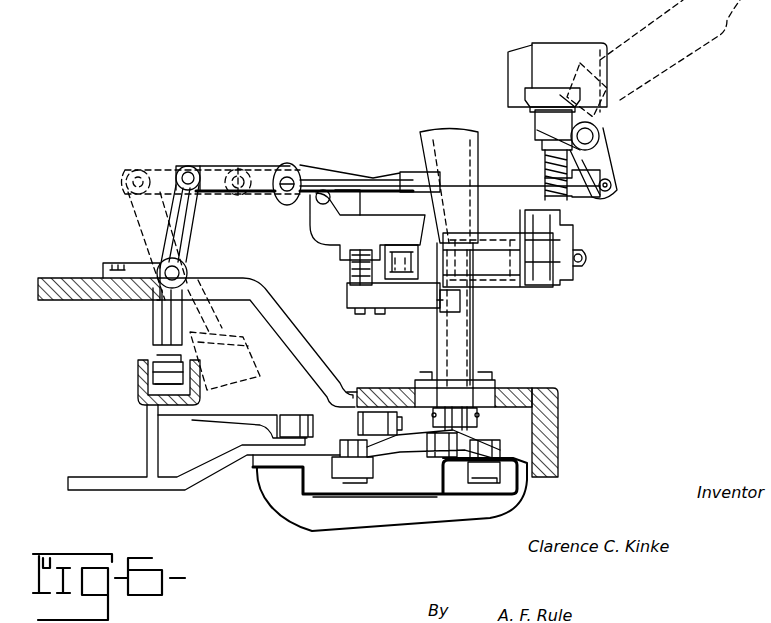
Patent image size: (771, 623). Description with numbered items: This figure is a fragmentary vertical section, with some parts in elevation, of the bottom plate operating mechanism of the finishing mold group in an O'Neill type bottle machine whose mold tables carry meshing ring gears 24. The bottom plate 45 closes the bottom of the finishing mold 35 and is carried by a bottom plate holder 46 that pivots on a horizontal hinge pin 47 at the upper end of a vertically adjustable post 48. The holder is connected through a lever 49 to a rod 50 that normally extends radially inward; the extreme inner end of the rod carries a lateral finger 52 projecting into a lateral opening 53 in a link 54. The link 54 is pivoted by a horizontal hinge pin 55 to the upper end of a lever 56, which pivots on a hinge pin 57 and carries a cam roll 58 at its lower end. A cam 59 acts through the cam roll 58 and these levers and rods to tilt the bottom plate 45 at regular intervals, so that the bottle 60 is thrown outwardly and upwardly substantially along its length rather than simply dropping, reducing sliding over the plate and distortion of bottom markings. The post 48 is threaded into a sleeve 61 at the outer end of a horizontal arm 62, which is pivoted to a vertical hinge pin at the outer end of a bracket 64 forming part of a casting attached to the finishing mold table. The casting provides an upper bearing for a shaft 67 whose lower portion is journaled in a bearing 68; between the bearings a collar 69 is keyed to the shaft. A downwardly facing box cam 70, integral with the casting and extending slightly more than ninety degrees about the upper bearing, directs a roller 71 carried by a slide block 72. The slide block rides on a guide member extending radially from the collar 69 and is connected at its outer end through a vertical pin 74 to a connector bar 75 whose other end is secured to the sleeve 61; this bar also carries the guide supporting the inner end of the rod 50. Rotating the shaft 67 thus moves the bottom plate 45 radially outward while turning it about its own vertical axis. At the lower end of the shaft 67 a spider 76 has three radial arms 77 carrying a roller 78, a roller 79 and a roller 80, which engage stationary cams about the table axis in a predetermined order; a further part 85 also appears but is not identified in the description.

The ring gears 24 is at (558, 395).
The finishing mold 35 is at (508, 66).
The bottom plate 45 is at (547, 90).
The bottom plate holder 46 is at (535, 124).
The horizontal hinge pin 47 is at (598, 131).
The vertically adjustable post 48 is at (545, 157).
The lever 49 is at (604, 157).
The rod 50 is at (496, 186).
The lateral finger 52 is at (287, 200).
The lateral opening 53 is at (288, 168).
The link 54 is at (212, 165).
The horizontal hinge pin 55 is at (192, 165).
The lever 56 is at (183, 248).
The hinge pin 57 is at (180, 272).
The cam roll 58 is at (155, 374).
The cam 59 is at (140, 398).
The bottle 60 is at (700, 42).
The sleeve 61 is at (570, 232).
The horizontal arm 62 is at (585, 255).
The bracket 64 is at (498, 248).
The shaft 67 is at (452, 350).
The bearing 68 is at (470, 349).
The collar 69 is at (468, 302).
The box cam 70 is at (395, 248).
The roller 71 is at (402, 262).
The slide block 72 is at (435, 310).
The vertical pin 74 is at (348, 270).
The connector bar 75 is at (378, 208).
The spider 76 is at (505, 427).
The radial arms 77 is at (397, 450).
The roller 78 is at (500, 457).
The roller 79 is at (363, 472).
The roller 80 is at (358, 423).
The bracket 85 is at (510, 490).